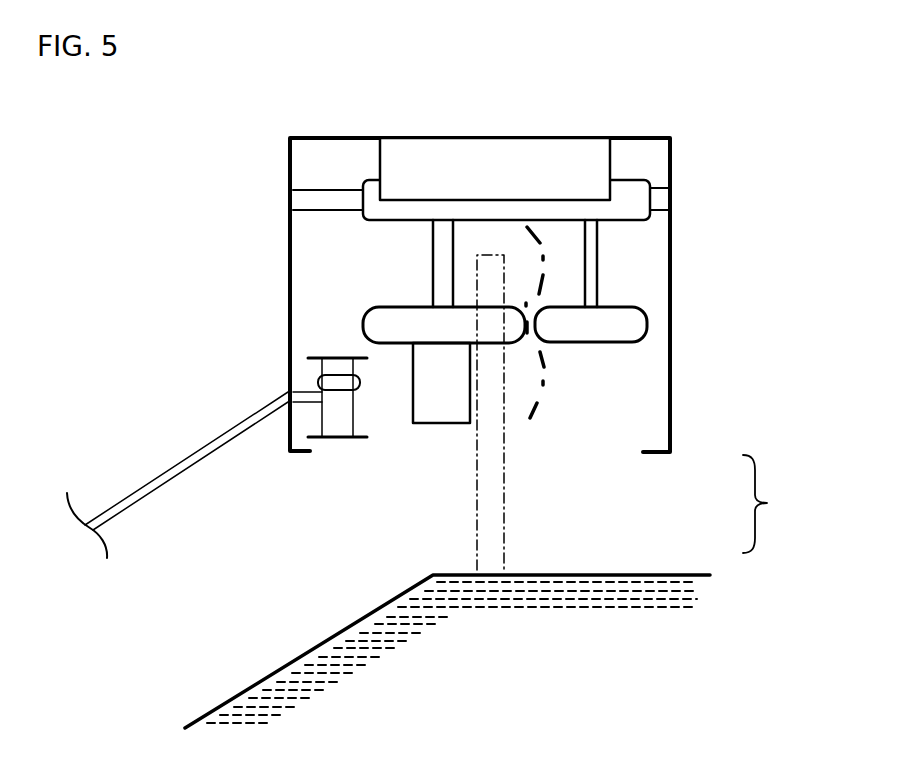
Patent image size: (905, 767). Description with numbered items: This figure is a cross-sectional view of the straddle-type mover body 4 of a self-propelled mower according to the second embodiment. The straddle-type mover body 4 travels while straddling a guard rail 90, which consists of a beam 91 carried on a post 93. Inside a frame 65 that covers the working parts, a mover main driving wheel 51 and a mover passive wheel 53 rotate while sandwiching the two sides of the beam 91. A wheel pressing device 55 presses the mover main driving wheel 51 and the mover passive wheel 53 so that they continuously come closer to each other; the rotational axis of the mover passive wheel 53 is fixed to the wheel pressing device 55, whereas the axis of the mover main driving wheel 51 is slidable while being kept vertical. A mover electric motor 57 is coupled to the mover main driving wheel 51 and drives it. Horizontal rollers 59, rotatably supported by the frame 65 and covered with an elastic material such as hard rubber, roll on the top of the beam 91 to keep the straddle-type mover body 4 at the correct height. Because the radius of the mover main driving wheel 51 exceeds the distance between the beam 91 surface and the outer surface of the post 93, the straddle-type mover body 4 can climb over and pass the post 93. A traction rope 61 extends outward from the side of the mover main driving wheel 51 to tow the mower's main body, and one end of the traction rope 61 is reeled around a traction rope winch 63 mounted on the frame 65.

The straddle-type mover body 4 is at (388, 287).
The mover main driving wheels 51 is at (390, 323).
The mover passive wheels 53 is at (590, 322).
The wheel pressing device 55 is at (502, 168).
The mover electric motor 57 is at (425, 400).
The horizontal rollers 59 is at (635, 202).
The traction rope 61 is at (172, 472).
The traction rope winch 63 is at (323, 440).
The frame 65 is at (288, 260).
The guard rail 90 is at (772, 504).
The beam 91 is at (543, 387).
The post 93 is at (492, 533).